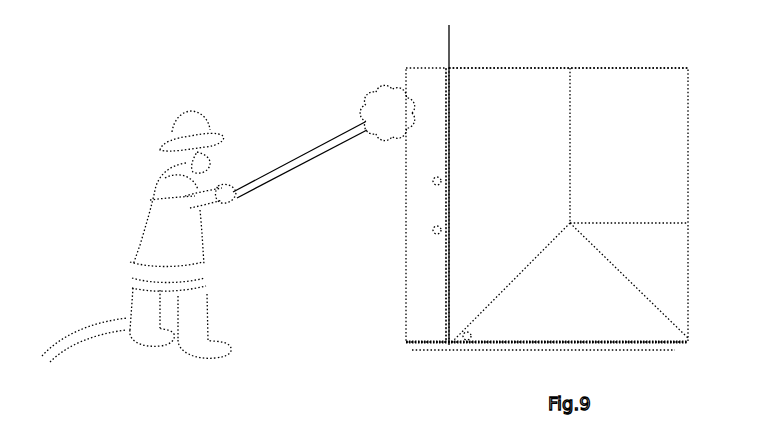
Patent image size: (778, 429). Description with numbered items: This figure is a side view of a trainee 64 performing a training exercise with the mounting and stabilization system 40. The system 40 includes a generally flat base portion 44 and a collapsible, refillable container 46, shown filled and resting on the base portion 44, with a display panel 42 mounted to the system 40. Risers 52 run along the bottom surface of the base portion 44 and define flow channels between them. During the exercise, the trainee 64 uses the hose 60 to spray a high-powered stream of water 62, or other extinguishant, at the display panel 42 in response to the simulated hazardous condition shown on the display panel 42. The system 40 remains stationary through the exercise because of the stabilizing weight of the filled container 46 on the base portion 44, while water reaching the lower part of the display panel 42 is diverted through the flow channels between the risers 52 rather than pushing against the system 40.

The mounting and stabilization system 40 is at (637, 127).
The display panel 42 is at (422, 302).
The base portion 44 is at (655, 343).
The container 46 is at (522, 87).
The risers 52 is at (470, 348).
The hose 60 is at (86, 342).
The stream of water 62 is at (253, 190).
The trainee 64 is at (155, 175).